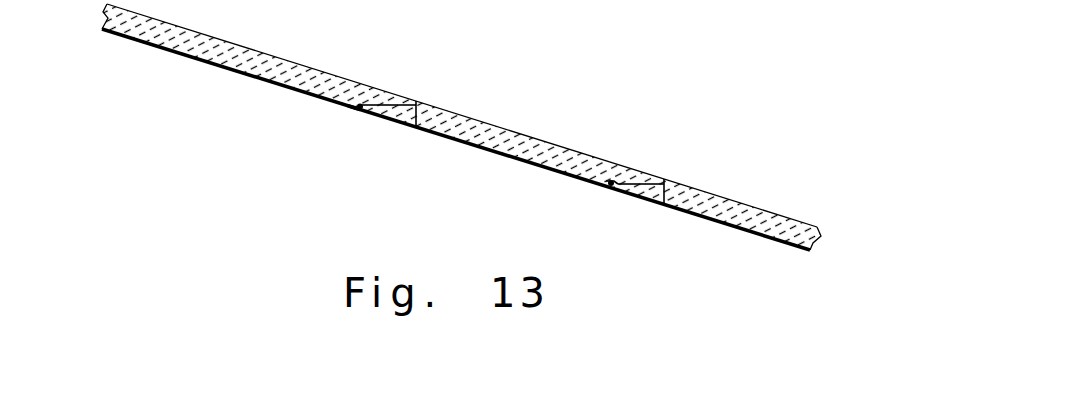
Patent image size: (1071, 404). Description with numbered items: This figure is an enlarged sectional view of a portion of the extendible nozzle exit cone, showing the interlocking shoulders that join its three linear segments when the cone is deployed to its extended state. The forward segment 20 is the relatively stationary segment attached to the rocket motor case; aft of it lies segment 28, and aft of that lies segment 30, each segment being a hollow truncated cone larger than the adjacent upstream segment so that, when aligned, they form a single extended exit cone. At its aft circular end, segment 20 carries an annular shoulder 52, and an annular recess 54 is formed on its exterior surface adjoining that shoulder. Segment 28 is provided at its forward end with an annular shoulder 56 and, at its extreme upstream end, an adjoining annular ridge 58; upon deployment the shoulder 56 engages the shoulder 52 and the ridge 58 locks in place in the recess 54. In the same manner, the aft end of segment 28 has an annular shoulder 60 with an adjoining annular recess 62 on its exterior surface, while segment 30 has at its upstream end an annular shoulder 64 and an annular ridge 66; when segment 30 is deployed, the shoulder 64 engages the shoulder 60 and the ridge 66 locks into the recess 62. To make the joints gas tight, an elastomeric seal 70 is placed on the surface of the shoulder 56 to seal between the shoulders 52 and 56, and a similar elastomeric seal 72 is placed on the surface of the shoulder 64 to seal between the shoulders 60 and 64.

The nozzle exit cone segment 20 is at (178, 50).
The exit cone segment 28 is at (502, 135).
The exit cone segment 30 is at (770, 217).
The annular shoulder 52 is at (416, 112).
The annular recess 54 is at (362, 108).
The annular shoulder 56 is at (396, 106).
The annular ridge 58 is at (358, 103).
The annular shoulder 60 is at (664, 195).
The annular recess 62 is at (611, 186).
The annular shoulder 64 is at (652, 183).
The annular ridge 66 is at (610, 181).
The elastomeric seal 70 is at (378, 104).
The elastomeric seal 72 is at (634, 184).